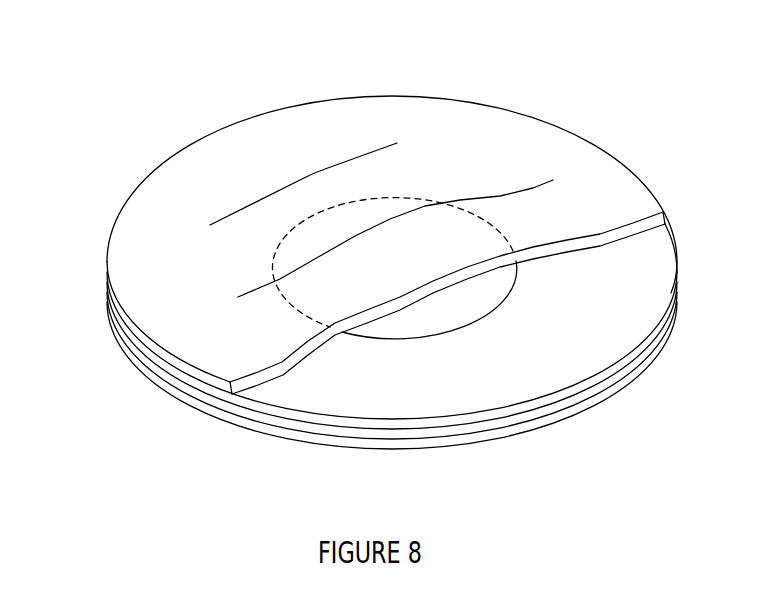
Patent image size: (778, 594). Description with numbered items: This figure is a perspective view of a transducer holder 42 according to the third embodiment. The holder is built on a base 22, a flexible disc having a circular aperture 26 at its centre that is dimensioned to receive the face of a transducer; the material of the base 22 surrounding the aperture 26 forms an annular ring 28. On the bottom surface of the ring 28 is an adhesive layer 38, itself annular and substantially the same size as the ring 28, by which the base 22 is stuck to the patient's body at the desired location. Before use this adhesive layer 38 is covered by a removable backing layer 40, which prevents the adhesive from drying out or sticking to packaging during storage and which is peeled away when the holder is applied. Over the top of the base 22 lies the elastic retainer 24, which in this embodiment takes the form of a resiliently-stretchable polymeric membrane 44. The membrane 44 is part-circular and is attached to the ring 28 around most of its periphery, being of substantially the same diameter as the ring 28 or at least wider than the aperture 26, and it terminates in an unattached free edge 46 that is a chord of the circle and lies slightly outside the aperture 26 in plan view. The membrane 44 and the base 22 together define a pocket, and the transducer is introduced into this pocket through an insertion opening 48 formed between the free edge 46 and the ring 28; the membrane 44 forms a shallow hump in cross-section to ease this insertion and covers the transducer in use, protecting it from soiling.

The base 22 is at (596, 357).
The elastic retainer 24 is at (292, 154).
The circular aperture 26 is at (453, 312).
The annular ring 28 is at (658, 273).
The adhesive layer 38 is at (222, 405).
The removable backing layer 40 is at (256, 428).
The transducer holder 42 is at (105, 176).
The resiliently-stretchable polymeric membrane 44 is at (390, 208).
The free edge 46 is at (490, 259).
The insertion opening 48 is at (405, 331).